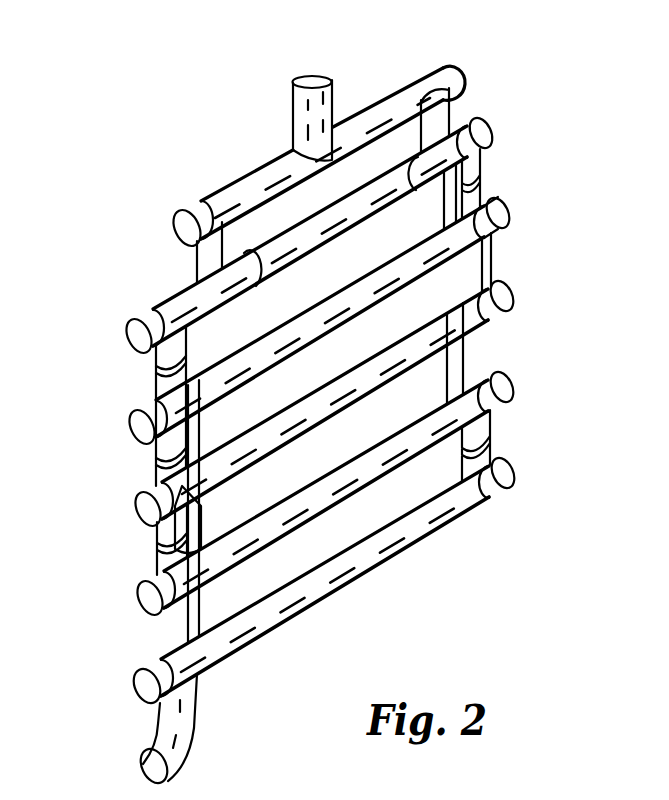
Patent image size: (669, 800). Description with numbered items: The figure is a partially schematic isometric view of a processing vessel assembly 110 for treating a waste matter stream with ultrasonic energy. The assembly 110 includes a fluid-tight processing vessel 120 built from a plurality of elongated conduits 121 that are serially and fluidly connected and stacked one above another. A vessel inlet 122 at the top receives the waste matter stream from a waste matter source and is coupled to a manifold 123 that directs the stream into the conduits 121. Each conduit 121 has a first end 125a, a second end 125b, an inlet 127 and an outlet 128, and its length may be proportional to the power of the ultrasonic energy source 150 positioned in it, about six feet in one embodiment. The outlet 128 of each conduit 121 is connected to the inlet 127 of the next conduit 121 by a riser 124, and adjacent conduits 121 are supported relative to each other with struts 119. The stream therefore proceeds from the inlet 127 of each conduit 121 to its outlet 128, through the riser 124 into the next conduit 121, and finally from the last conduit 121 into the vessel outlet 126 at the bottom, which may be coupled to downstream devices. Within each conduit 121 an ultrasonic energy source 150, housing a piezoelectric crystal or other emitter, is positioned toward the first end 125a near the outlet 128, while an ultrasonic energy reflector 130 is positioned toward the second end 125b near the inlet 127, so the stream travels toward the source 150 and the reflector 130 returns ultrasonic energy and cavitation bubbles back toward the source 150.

The processing vessel assembly 110 is at (125, 163).
The struts 119 is at (492, 162).
The processing vessel 120 is at (123, 433).
The conduits 121 is at (278, 253).
The vessel inlet 122 is at (292, 110).
The manifold 123 is at (407, 84).
The riser 124 is at (215, 396).
The first end 125a is at (124, 335).
The second end 125b is at (503, 130).
The vessel outlet 126 is at (193, 735).
The inlet 127 is at (410, 173).
The outlet 128 is at (200, 322).
The ultrasonic energy reflector 130 is at (473, 130).
The ultrasonic energy source 150 is at (141, 326).